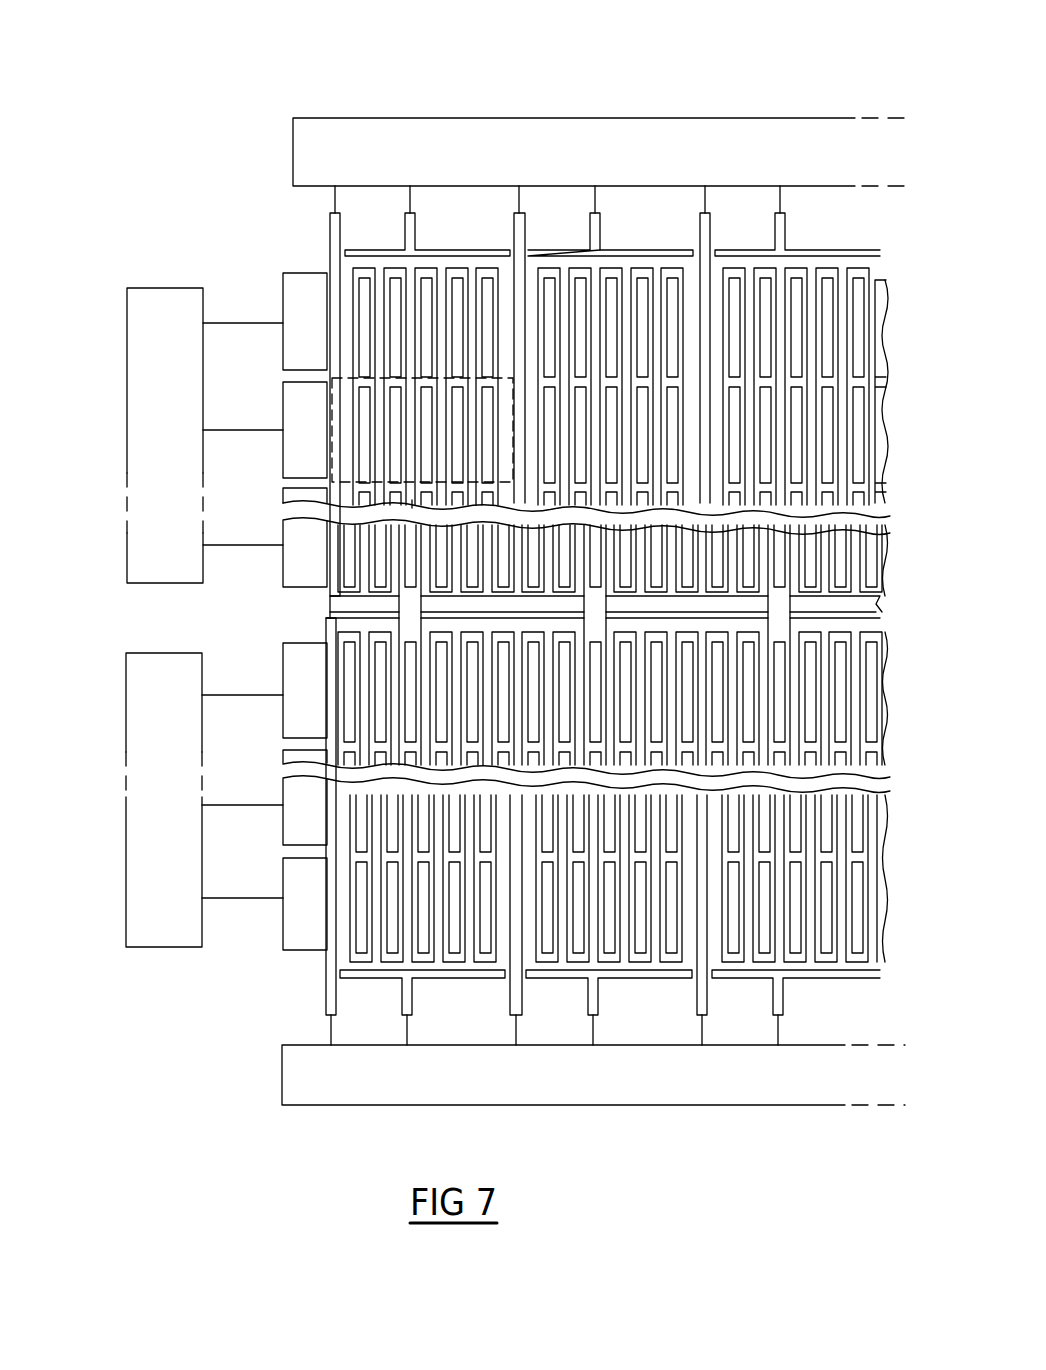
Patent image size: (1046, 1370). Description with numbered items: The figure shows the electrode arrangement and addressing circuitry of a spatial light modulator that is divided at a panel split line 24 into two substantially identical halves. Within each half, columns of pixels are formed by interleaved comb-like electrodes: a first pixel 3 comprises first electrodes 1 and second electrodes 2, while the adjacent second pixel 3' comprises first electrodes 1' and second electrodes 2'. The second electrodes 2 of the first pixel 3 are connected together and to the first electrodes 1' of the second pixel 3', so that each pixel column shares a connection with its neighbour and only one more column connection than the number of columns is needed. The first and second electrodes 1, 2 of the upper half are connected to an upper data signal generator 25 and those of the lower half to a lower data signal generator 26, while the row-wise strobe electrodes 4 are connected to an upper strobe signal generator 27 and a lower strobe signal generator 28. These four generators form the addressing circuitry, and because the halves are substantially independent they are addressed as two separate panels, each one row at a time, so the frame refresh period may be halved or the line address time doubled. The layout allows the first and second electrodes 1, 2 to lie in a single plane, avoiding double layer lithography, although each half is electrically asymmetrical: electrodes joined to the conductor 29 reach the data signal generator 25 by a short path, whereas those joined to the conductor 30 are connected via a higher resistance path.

The first electrodes 1 is at (276, 612).
The first electrodes of the second pixel 1' is at (587, 611).
The second electrodes 2 is at (613, 611).
The second electrodes of the second pixel 2' is at (604, 611).
The first pixel 3 is at (374, 438).
The second pixel 3' is at (325, 560).
The strobe electrodes 4 is at (283, 313).
The panel split line 24 is at (318, 608).
The upper data signal generator 25 is at (603, 118).
The lower data signal generator 26 is at (551, 1105).
The upper strobe signal generator 27 is at (127, 407).
The lower strobe signal generator 28 is at (126, 812).
The conductor 29 is at (596, 237).
The conductor 30 is at (707, 237).